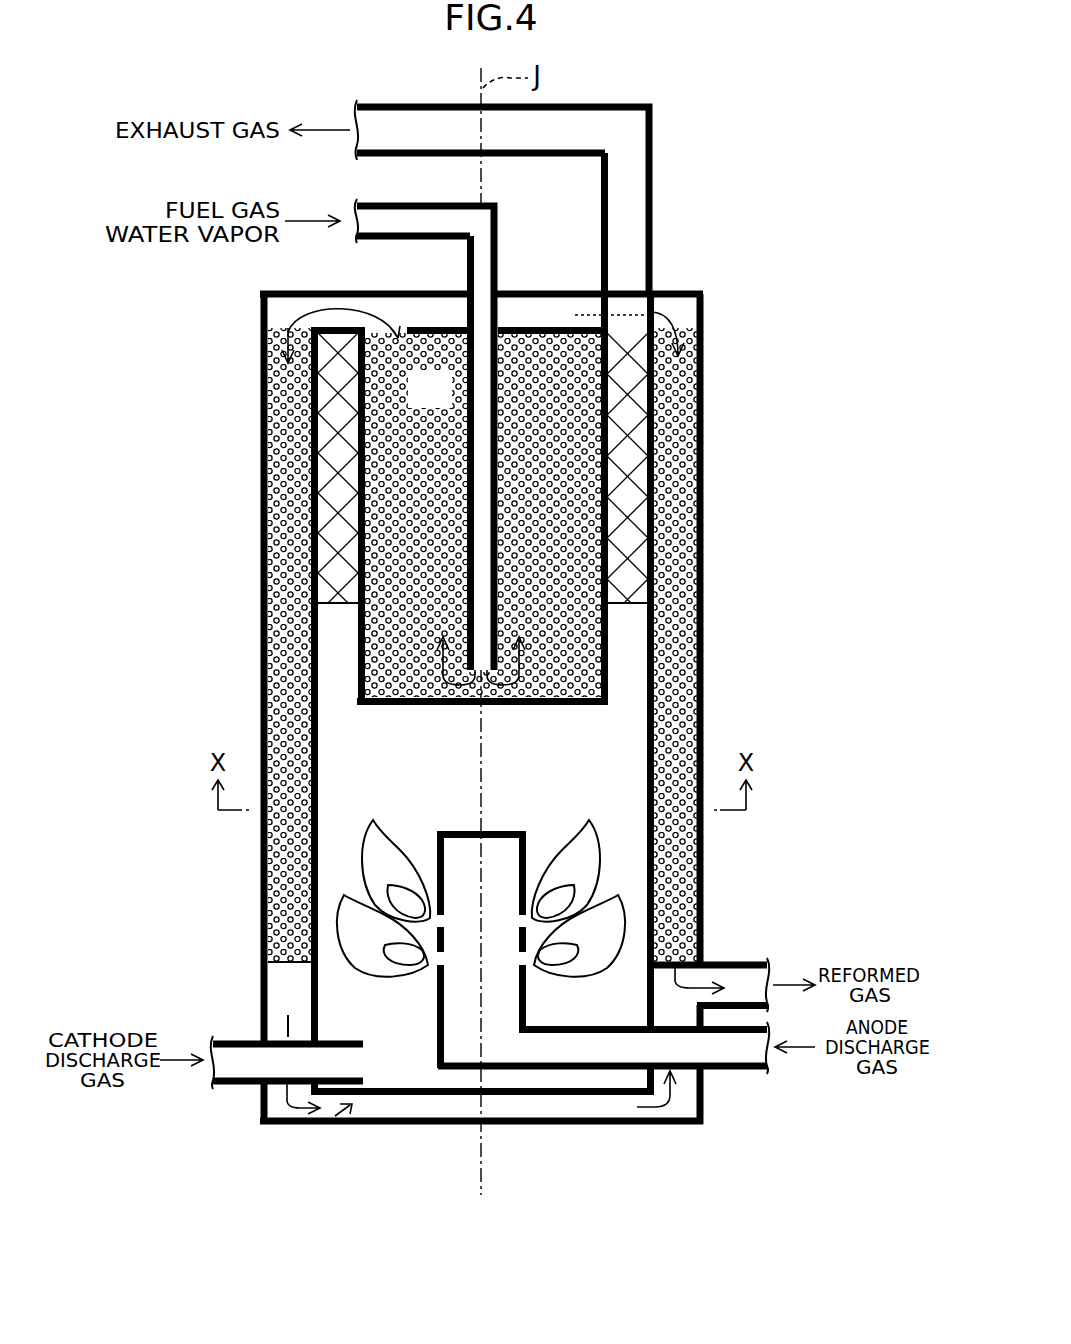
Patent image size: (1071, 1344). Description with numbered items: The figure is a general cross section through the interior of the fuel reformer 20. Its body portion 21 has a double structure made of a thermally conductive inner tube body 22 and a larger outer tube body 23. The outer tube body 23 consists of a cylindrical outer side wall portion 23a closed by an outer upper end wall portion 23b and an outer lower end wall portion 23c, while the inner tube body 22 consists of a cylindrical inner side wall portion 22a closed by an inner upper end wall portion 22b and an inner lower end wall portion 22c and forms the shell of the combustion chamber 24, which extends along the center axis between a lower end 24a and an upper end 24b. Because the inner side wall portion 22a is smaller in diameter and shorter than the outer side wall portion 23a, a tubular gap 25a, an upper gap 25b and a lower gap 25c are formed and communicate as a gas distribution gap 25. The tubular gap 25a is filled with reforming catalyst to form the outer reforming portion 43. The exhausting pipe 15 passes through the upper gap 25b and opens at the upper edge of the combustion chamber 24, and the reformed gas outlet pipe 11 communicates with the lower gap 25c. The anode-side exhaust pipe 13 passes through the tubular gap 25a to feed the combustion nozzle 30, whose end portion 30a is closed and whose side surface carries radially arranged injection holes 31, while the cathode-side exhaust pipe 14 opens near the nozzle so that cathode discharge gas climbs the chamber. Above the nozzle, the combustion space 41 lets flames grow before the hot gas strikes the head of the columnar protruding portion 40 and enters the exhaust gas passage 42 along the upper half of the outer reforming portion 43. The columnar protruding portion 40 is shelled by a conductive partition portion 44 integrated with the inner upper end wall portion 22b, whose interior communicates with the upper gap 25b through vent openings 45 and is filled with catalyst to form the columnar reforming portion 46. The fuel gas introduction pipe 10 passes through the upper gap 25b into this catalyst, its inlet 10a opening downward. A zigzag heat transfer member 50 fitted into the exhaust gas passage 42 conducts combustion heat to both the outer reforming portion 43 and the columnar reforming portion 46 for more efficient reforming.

The fuel gas introduction pipe 10 is at (403, 205).
The inlet 10a is at (483, 675).
The reformed gas outlet pipe 11 is at (742, 962).
The anode-side exhaust pipe 13 is at (735, 1070).
The cathode-side exhaust pipe 14 is at (237, 1083).
The exhausting pipe 15 is at (400, 102).
The fuel reformer 20 is at (725, 129).
The body portion 21 is at (723, 645).
The inner tube body 22 is at (662, 556).
The inner side wall portion 22a is at (655, 402).
The inner upper end wall portion 22b is at (413, 328).
The inner lower end wall portion 22c is at (533, 1097).
The outer tube body 23 is at (786, 538).
The outer side wall portion 23a is at (703, 447).
The outer upper end wall portion 23b is at (680, 294).
The outer lower end wall portion 23c is at (603, 1125).
The combustion chamber 24 is at (330, 814).
The lower end 24a is at (437, 1094).
The upper end 24b is at (531, 333).
The gas distribution gap 25 is at (251, 737).
The tubular gap 25a is at (271, 1003).
The upper gap 25b is at (276, 318).
The lower gap 25c is at (333, 1127).
The combustion nozzle 30 is at (464, 913).
The end portion 30a is at (450, 832).
The injection holes 31 is at (448, 972).
The columnar protruding portion 40 is at (345, 636).
The combustion space 41 is at (444, 806).
The exhaust gas passage 42 is at (327, 514).
The outer reforming portion 43 is at (683, 718).
The partition portion 44 is at (607, 668).
The vent openings 45 is at (406, 345).
The columnar reforming portion 46 is at (397, 660).
The heat transfer member 50 is at (332, 410).